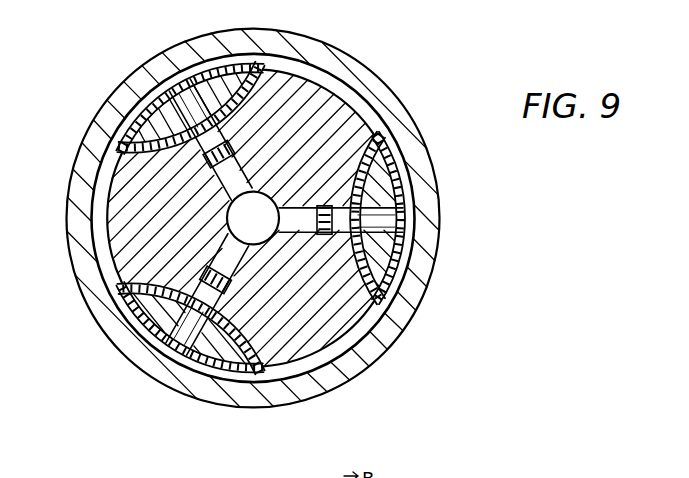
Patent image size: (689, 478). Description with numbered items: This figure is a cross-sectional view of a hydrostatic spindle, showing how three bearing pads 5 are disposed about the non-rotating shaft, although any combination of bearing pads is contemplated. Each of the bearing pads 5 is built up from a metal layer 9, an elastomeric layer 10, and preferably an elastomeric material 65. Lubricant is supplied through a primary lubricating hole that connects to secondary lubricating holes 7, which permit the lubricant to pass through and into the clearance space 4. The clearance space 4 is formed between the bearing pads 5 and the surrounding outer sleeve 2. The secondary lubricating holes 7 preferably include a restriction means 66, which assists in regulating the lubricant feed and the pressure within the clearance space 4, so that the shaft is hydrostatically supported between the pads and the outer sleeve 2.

The outer sleeve 2 is at (358, 78).
The clearance space 4 is at (200, 58).
The bearing pads 5 is at (273, 82).
The secondary lubricating holes 7 is at (240, 181).
The metal layer 9 is at (118, 96).
The elastomeric layer 10 is at (172, 166).
The elastomeric material 65 is at (257, 60).
The restriction means 66 is at (238, 148).